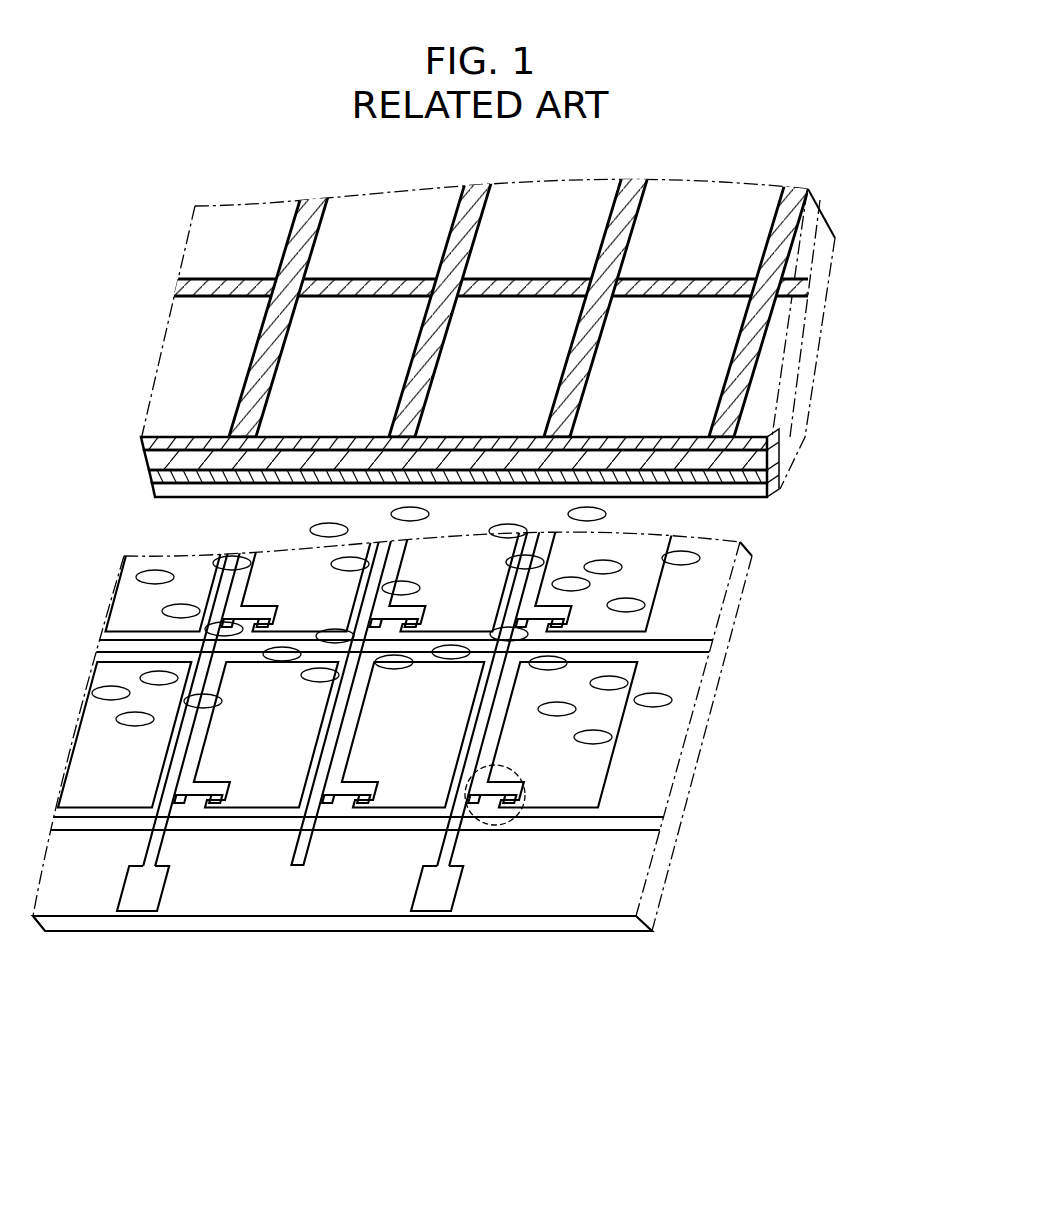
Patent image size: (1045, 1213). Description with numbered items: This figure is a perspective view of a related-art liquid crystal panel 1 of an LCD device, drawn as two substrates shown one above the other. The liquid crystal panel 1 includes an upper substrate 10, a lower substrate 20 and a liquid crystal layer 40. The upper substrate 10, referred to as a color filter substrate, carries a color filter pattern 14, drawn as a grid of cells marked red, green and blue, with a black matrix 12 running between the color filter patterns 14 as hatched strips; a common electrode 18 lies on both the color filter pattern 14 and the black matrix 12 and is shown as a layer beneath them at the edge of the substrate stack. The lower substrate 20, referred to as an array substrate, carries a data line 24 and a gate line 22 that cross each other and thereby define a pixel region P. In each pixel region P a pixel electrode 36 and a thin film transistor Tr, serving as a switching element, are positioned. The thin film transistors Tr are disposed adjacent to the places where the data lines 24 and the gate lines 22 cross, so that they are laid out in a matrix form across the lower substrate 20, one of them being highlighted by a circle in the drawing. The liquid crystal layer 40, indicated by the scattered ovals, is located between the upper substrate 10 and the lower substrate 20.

The liquid crystal panel 1 is at (816, 777).
The upper substrate 10 is at (763, 460).
The black matrix 12 is at (795, 290).
The color filter pattern 14 is at (747, 250).
The common electrode 18 is at (765, 490).
The lower substrate 20 is at (620, 922).
The gate line 22 is at (620, 824).
The data line 24 is at (440, 858).
The pixel electrode 36 is at (597, 795).
The liquid crystal layer 40 is at (700, 617).
The pixel region P is at (637, 824).
The thin film transistor Tr is at (510, 818).